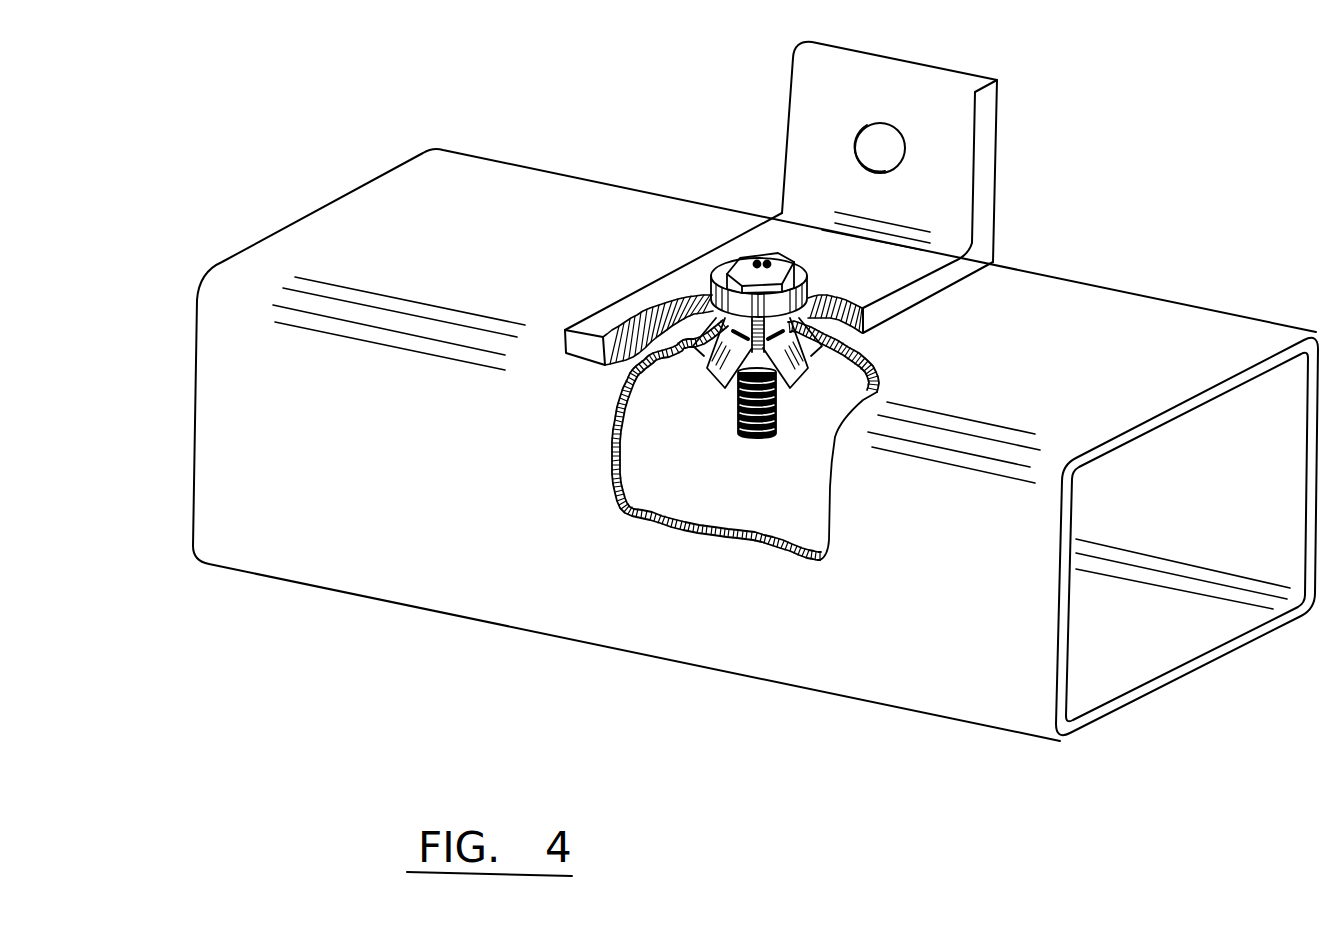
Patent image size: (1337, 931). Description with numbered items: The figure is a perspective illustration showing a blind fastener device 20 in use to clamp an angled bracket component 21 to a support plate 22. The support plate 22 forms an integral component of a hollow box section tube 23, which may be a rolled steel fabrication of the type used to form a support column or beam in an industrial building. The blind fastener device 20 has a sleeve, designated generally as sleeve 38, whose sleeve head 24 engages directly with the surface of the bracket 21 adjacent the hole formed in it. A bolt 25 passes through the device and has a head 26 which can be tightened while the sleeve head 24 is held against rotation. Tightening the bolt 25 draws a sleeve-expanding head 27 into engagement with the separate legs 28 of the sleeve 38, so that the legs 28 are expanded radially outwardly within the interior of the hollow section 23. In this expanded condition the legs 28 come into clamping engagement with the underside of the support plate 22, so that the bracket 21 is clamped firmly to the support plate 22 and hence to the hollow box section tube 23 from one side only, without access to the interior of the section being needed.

The blind fastener device 20 is at (740, 303).
The angled bracket component 21 is at (937, 140).
The support plate 22 is at (755, 511).
The hollow box section tube 23 is at (852, 663).
The sleeve head 24 is at (803, 273).
The bolt 25 is at (740, 417).
The head 26 is at (745, 260).
The sleeve-expanding head 27 is at (750, 368).
The separate legs 28 is at (787, 398).
The sleeve 38 is at (703, 355).